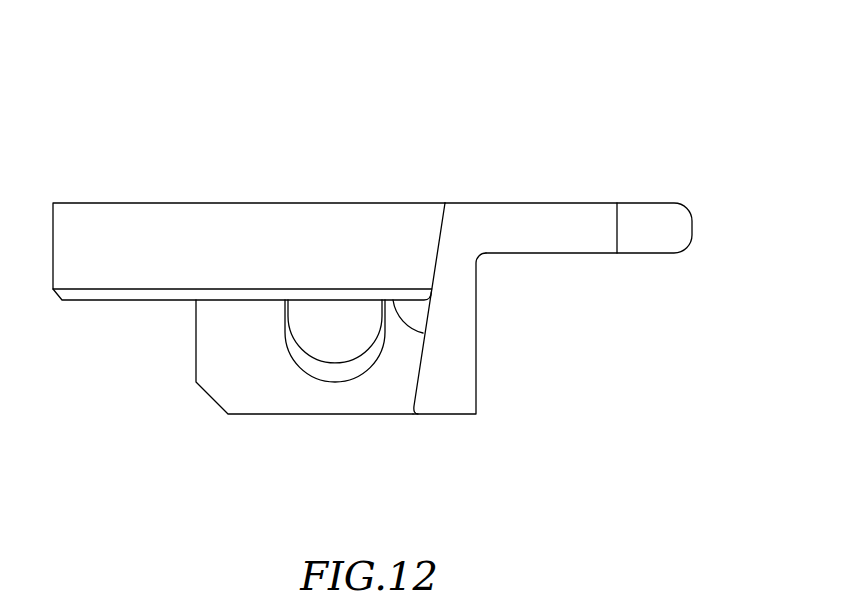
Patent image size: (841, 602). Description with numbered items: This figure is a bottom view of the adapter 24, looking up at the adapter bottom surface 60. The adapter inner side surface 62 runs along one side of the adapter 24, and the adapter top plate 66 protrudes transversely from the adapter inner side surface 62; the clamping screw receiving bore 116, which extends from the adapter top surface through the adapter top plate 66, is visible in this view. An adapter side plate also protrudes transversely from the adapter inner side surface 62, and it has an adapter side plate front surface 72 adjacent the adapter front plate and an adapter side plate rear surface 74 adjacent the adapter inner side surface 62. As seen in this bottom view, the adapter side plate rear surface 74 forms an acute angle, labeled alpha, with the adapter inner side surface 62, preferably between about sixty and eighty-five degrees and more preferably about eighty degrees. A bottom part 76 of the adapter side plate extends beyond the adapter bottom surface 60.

The adapter 24 is at (150, 95).
The adapter bottom surface 60 is at (126, 220).
The adapter inner side surface 62 is at (123, 295).
The adapter top plate 66 is at (240, 373).
The adapter side plate front surface 72 is at (476, 318).
The adapter side plate rear surface 74 is at (415, 372).
The bottom part of the adapter side plate 76 is at (547, 227).
The clamping screw receiving bore 116 is at (331, 344).